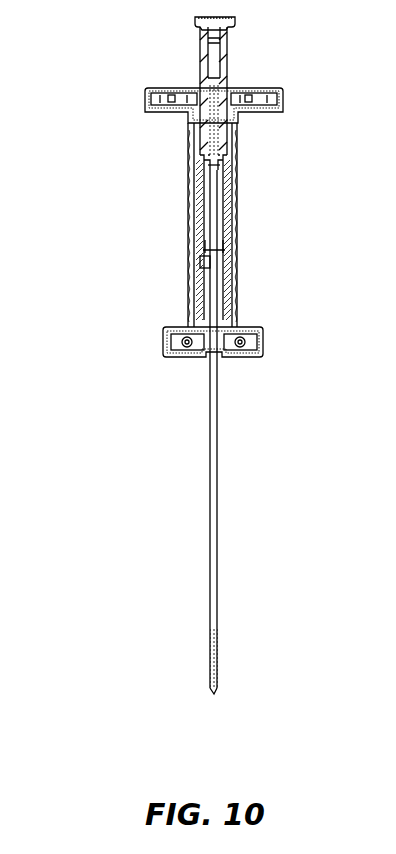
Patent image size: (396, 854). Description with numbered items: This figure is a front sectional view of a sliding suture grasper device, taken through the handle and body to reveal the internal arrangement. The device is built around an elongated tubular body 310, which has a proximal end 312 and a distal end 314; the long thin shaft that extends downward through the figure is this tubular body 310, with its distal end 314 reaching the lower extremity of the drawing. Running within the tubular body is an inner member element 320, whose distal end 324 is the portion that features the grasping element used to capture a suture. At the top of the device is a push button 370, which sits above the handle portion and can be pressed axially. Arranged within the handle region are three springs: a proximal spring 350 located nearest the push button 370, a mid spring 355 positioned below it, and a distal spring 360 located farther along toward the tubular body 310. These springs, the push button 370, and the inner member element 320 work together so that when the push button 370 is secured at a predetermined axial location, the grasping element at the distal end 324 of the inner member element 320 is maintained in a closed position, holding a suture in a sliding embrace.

The push button 370 is at (230, 33).
The proximal spring 350 is at (223, 118).
The mid spring 355 is at (222, 188).
The distal spring 360 is at (225, 295).
The inner member element 320 is at (222, 250).
The distal end 324 is at (195, 182).
The distal end 314 is at (186, 262).
The elongated tubular body 310 is at (217, 445).
The proximal end 312 is at (235, 676).